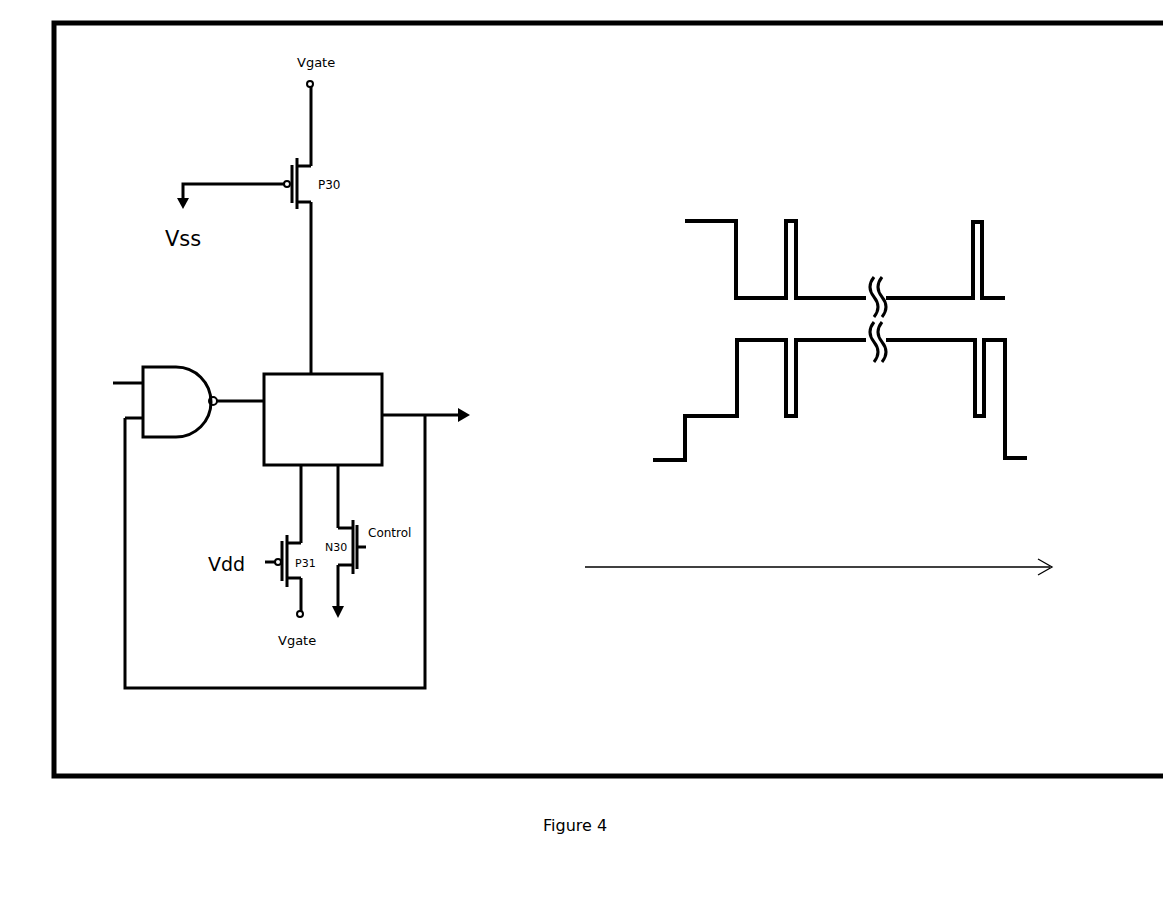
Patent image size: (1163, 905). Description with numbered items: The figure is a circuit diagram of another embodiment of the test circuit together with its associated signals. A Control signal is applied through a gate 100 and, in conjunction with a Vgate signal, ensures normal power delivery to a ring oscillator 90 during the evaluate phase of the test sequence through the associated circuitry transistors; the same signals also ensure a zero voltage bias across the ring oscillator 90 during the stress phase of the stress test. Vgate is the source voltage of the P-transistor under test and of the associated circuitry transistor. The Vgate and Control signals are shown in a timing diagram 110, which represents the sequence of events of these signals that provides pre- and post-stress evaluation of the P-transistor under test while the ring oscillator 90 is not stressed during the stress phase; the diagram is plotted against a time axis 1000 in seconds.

The NAND gate 100 is at (190, 410).
The ring oscillator 90 is at (327, 447).
The timing diagram 110 is at (813, 508).
The time axis 1000 is at (865, 576).